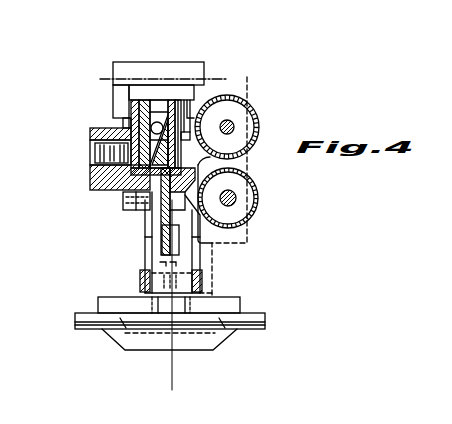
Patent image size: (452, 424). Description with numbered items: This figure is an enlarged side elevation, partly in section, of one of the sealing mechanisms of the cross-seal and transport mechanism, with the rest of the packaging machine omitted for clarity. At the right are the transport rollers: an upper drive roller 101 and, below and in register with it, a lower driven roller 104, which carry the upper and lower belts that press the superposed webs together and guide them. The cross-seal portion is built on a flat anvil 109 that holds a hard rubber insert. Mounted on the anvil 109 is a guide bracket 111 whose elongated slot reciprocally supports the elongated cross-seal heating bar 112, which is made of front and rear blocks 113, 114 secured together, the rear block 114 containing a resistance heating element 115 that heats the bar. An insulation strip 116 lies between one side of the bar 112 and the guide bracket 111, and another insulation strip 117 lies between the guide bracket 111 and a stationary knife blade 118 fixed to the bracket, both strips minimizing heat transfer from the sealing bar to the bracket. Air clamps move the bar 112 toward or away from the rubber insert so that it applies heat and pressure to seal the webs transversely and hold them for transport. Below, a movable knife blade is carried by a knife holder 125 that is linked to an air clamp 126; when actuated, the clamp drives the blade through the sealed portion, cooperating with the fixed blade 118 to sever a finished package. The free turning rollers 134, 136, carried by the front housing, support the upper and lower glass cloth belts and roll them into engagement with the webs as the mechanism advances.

The upper drive roller 101 is at (252, 108).
The lower driven roller 104 is at (258, 189).
The flat anvil 109 is at (127, 192).
The guide bracket 111 is at (123, 125).
The cross-seal heating bar 112 is at (140, 103).
The front block 113 is at (132, 106).
The rear block 114 is at (155, 103).
The resistance heating element 115 is at (187, 128).
The insulation strip 116 is at (130, 112).
The insulation strip 117 is at (180, 117).
The stationary knife blade 118 is at (247, 78).
The knife holder 125 is at (173, 242).
The air clamp 126 is at (212, 342).
The free turning roller 134 is at (93, 155).
The free turning roller 136 is at (100, 190).